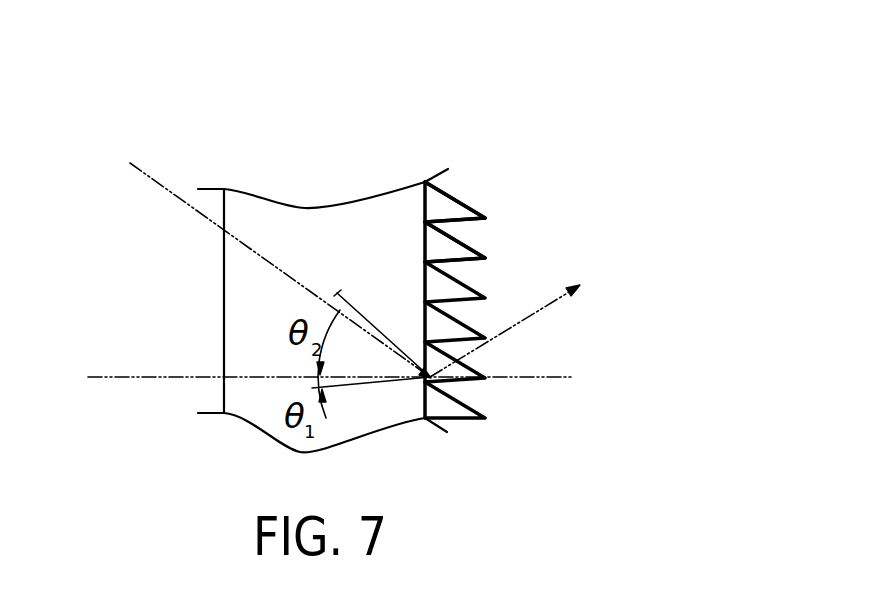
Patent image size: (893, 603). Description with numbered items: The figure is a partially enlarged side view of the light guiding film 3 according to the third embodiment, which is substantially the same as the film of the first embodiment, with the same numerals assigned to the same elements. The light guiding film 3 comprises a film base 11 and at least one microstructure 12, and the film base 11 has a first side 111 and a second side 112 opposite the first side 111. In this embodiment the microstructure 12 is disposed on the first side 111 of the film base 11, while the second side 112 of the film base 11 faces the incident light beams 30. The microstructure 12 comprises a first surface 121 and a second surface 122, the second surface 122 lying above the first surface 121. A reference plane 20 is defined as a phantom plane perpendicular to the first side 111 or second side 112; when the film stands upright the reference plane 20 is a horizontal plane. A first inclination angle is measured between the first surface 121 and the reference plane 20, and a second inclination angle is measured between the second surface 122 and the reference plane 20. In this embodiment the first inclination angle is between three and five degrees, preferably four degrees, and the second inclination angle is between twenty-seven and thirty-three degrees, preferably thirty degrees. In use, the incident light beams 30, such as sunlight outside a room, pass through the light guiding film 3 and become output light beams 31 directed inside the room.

The light guiding film 3 is at (347, 245).
The film base 11 is at (283, 298).
The first side 111 is at (440, 195).
The second side 112 is at (222, 302).
The microstructure 12 is at (501, 268).
The first surface 121 is at (457, 260).
The second surface 122 is at (480, 221).
The reference plane 20 is at (510, 377).
The incident light beams 30 is at (162, 185).
The output light beams 31 is at (535, 313).